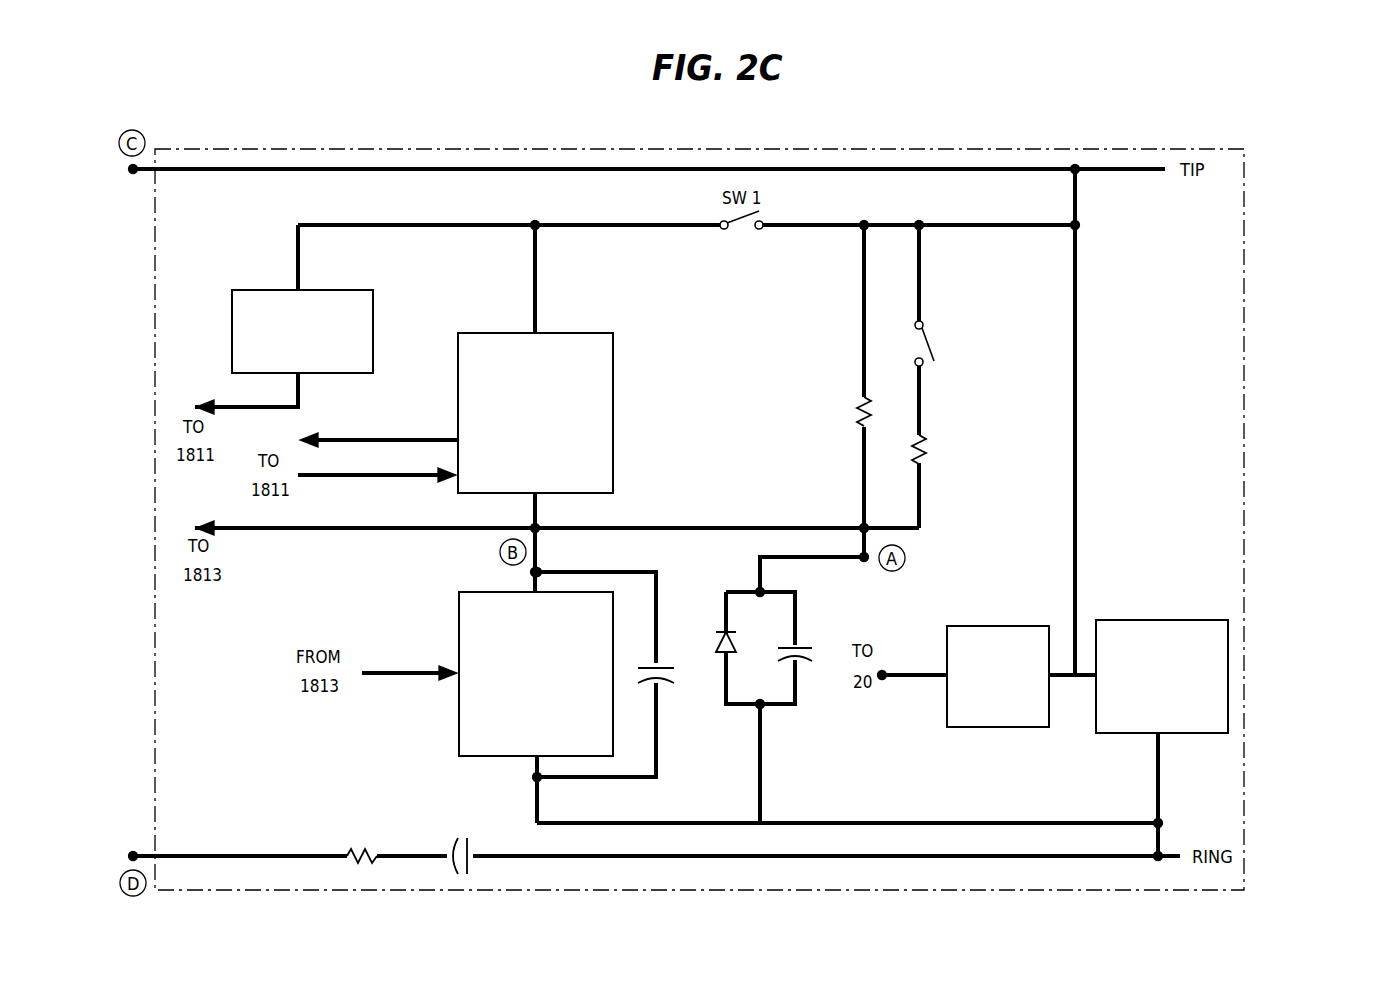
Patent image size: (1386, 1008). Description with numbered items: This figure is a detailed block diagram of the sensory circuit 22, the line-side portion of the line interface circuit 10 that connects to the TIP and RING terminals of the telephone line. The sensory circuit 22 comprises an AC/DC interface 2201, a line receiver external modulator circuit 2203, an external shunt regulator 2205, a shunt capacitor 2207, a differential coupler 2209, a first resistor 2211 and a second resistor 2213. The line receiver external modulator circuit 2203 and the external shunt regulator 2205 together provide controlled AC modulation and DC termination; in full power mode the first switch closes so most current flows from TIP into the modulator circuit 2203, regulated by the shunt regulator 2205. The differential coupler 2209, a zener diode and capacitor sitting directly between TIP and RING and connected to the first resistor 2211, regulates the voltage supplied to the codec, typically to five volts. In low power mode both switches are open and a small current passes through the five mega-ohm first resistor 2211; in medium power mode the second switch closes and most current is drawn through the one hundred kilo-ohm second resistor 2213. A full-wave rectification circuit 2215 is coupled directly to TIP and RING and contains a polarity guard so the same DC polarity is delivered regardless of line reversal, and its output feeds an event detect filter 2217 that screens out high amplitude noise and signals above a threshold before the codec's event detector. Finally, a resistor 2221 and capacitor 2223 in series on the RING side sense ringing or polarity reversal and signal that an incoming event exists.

The line interface circuit 10 is at (1329, 151).
The sensory circuit 22 is at (1245, 292).
The AC/DC interface 2201 is at (374, 297).
The line receiver external modulator circuit 2203 is at (614, 387).
The external shunt regulator 2205 is at (458, 612).
The shunt capacitor 2207 is at (666, 683).
The differential coupler 2209 is at (797, 683).
The first resistor 2211 is at (858, 405).
The second resistor 2213 is at (926, 447).
The full-wave rectification circuit 2215 is at (1120, 620).
The event detect filter 2217 is at (964, 626).
The resistor 2221 is at (349, 850).
The capacitor 2223 is at (454, 840).